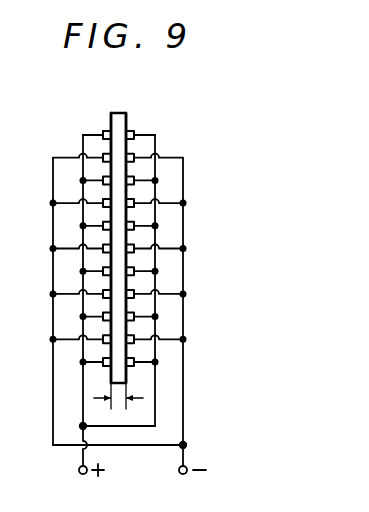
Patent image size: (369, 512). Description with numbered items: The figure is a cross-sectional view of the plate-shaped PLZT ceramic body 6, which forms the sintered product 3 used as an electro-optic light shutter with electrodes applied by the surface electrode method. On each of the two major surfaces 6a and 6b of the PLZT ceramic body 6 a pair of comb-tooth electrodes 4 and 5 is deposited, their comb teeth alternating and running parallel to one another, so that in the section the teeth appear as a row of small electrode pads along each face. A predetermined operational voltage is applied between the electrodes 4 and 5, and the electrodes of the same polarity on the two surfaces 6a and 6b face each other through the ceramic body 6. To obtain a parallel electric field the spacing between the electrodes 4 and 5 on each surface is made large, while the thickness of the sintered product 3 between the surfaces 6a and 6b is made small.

The sintered product 3 is at (38, 289).
The comb-tooth electrode 4 is at (104, 134).
The comb-tooth electrode 5 is at (103, 156).
The PLZT ceramic body 6 is at (115, 114).
The major surface 6a is at (128, 117).
The major surface 6b is at (111, 117).